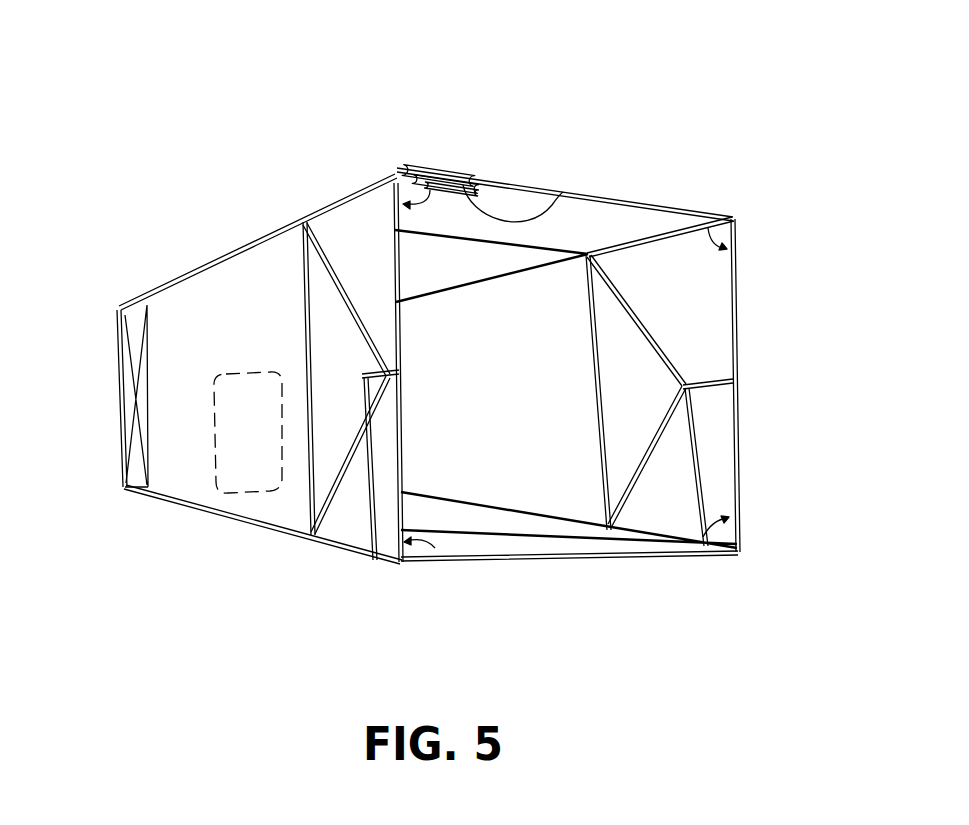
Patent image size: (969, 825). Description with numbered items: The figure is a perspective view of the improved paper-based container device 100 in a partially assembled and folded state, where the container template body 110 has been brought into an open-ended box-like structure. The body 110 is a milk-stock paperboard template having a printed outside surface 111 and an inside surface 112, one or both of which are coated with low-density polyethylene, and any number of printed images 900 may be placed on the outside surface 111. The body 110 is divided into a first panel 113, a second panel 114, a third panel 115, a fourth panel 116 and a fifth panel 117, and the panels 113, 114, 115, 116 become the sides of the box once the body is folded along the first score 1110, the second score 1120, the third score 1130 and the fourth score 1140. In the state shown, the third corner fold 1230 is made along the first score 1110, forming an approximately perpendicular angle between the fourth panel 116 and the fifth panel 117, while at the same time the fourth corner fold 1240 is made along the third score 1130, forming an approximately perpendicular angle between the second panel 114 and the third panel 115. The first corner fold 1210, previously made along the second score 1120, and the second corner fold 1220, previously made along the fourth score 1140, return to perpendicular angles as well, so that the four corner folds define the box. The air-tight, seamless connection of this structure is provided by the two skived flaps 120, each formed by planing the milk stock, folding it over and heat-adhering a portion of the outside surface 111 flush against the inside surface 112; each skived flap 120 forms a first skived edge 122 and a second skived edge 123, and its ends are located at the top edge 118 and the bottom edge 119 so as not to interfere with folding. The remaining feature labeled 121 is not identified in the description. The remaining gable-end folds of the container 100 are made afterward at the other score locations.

The container device 100 is at (186, 169).
The container template body 110 is at (698, 206).
The printed outside surface 111 is at (230, 260).
The inside surface 112 is at (615, 221).
The first panel 113 is at (458, 275).
The second panel 114 is at (485, 397).
The third panel 115 is at (448, 527).
The fourth panel 116 is at (241, 325).
The fifth panel 117 is at (563, 192).
The top edge 118 is at (120, 360).
The bottom edge 119 is at (675, 557).
The skived flap 120 is at (408, 166).
The hinge knuckle 121 is at (440, 187).
The first skived edge 122 is at (492, 187).
The second skived edge 123 is at (395, 178).
The printed image 900 is at (270, 442).
The first score 1110 is at (392, 181).
The second score 1120 is at (392, 563).
The third score 1130 is at (740, 554).
The fourth score 1140 is at (733, 219).
The first corner fold 1210 is at (417, 556).
The second corner fold 1220 is at (716, 222).
The third corner fold 1230 is at (420, 226).
The fourth corner fold 1240 is at (703, 537).